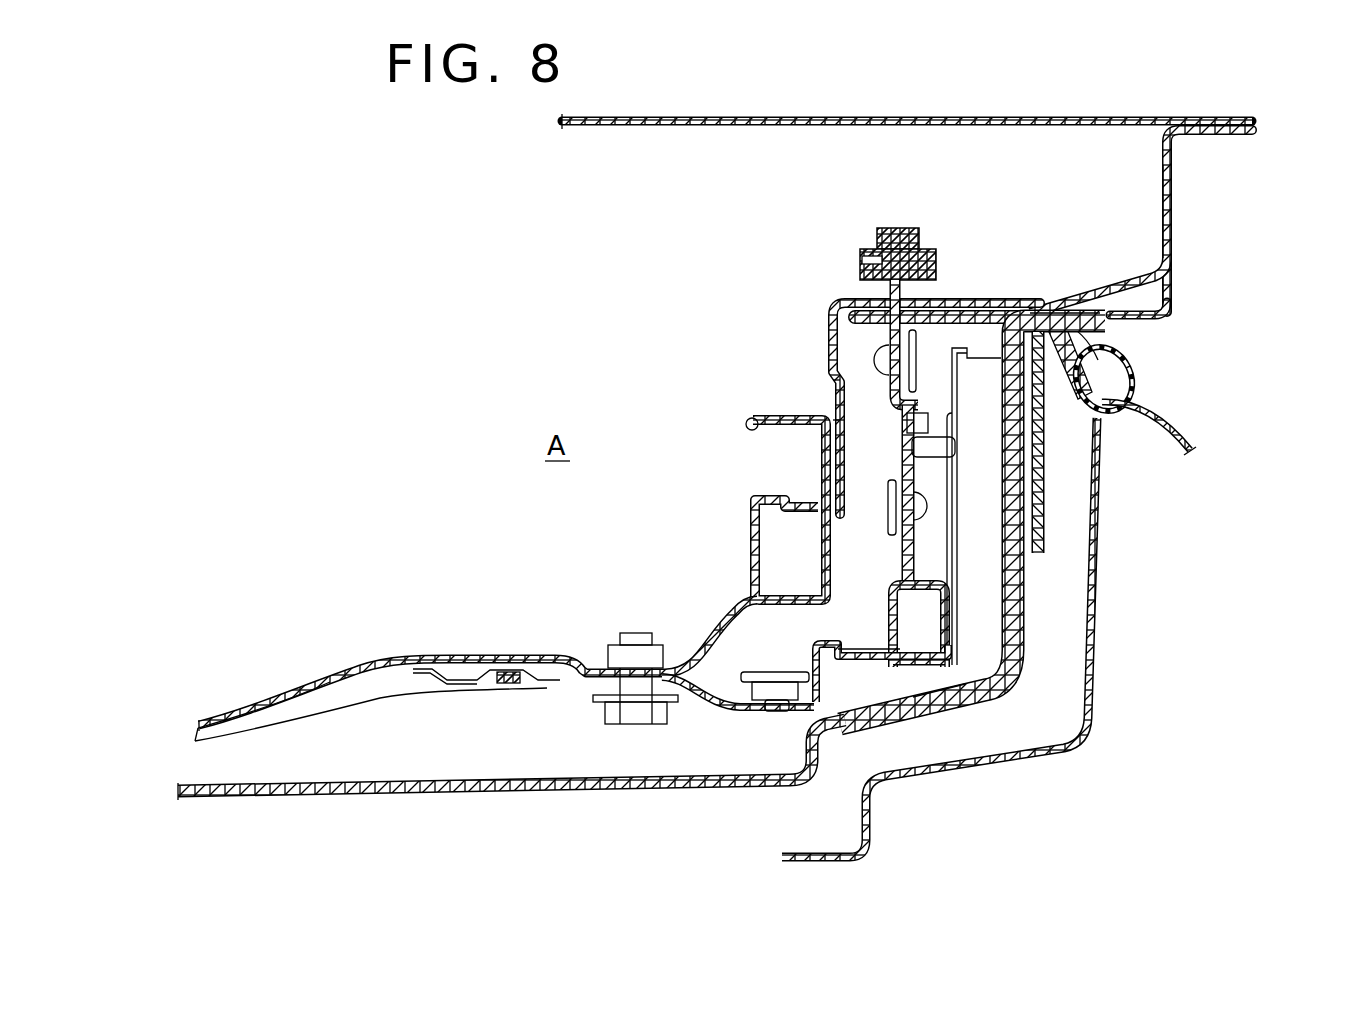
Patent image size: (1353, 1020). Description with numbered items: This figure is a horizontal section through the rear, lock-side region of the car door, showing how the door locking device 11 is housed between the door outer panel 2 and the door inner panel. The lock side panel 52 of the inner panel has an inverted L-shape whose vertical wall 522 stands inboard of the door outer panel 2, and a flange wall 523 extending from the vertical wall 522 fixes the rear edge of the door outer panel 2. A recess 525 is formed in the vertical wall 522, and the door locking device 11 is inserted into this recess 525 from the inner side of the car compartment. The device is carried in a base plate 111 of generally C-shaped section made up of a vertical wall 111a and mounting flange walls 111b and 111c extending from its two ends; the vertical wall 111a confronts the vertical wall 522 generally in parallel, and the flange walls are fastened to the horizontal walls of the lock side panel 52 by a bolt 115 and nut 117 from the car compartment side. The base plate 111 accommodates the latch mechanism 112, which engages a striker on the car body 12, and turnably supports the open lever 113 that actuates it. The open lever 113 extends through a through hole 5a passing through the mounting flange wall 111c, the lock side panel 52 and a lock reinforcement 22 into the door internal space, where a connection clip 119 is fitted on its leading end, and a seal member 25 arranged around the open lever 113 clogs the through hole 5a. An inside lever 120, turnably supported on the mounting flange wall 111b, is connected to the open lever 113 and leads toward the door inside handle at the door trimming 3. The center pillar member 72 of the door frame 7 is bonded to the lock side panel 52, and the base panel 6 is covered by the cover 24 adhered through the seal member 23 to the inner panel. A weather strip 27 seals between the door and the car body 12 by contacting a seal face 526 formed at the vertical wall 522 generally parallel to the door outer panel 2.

The door outer panel 2 is at (913, 112).
The door trimming 3 is at (515, 795).
The through hole 5a is at (950, 296).
The base panel 6 is at (385, 658).
The door frame 7 is at (738, 418).
The door locking device 11 is at (872, 465).
The car body 12 is at (1093, 692).
The lock reinforcement 22 is at (1115, 272).
The seal member 23 is at (511, 692).
The cover 24 is at (340, 714).
The seal member 25 is at (962, 310).
The weather strip 27 is at (1130, 378).
The lock side panel 52 is at (1173, 223).
The center pillar member 72 is at (750, 517).
The base plate 111 is at (1039, 563).
The vertical wall 111a is at (1015, 510).
The mounting flange wall 111b is at (915, 705).
The mounting flange wall 111c is at (965, 327).
The latch mechanism 112 is at (975, 566).
The open lever 113 is at (902, 550).
The bolt 115 is at (640, 722).
The nut 117 is at (618, 652).
The connection clip 119 is at (900, 228).
The inside lever 120 is at (840, 648).
The vertical wall 522 is at (850, 382).
The flange wall 523 is at (1200, 122).
The recess 525 is at (845, 420).
The seal face 526 is at (1137, 322).